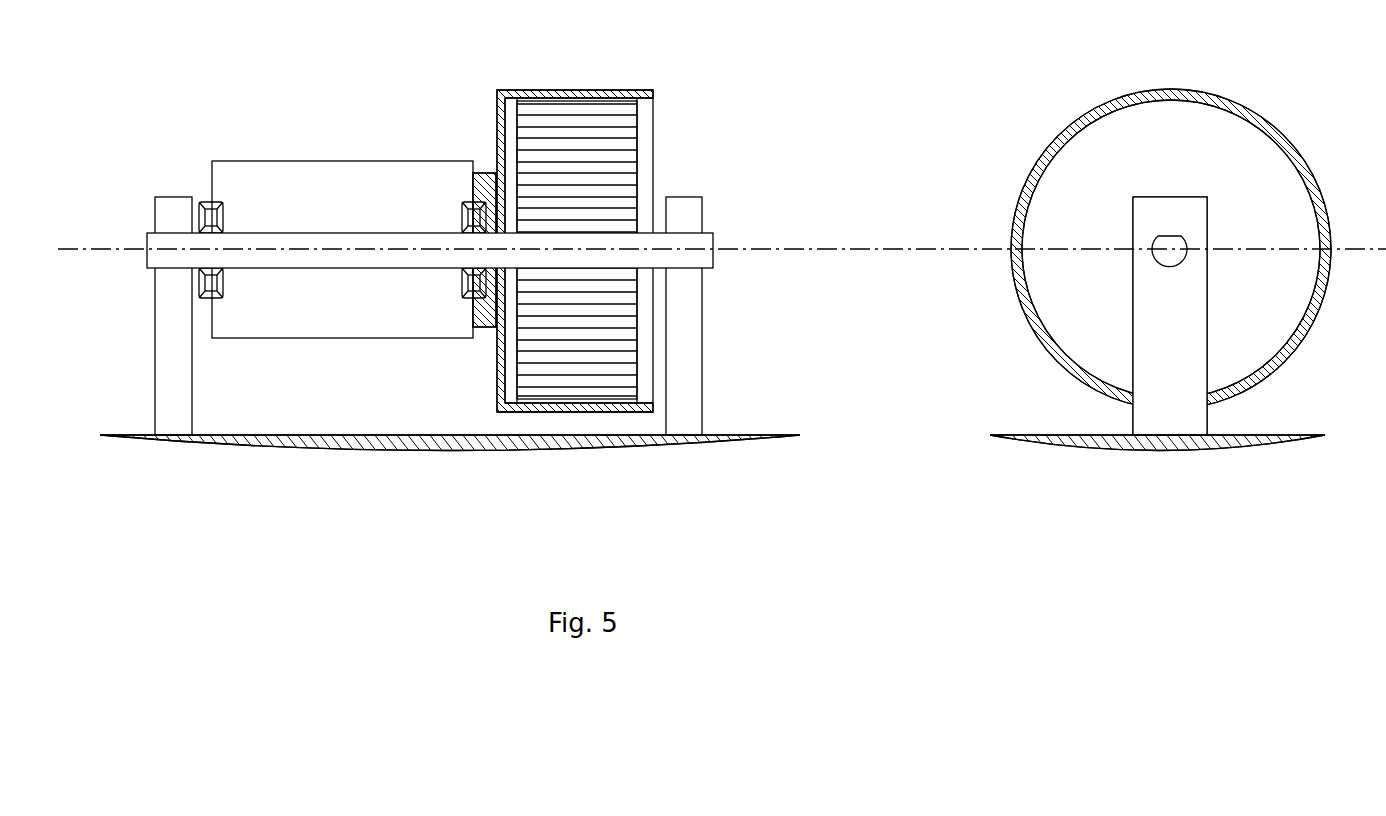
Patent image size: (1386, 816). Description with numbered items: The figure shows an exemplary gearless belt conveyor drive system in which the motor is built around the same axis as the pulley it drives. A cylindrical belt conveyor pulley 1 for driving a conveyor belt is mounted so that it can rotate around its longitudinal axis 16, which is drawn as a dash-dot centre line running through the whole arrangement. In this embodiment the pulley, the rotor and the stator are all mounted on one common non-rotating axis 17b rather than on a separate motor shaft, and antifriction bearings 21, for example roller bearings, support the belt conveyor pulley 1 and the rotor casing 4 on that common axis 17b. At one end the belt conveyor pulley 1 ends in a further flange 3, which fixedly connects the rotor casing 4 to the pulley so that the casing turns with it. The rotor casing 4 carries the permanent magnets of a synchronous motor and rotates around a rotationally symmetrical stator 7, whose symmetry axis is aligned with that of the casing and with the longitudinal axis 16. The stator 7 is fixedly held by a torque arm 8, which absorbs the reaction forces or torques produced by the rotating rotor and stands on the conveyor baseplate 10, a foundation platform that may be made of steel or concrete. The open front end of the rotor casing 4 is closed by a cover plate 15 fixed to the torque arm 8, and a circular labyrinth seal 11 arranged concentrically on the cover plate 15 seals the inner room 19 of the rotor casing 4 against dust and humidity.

The belt conveyor pulley 1 is at (257, 187).
The further flange 3 is at (485, 173).
The rotor casing 4 is at (558, 90).
The stator 7 is at (615, 175).
The torque arm 8 is at (688, 372).
The conveyor baseplate 10 is at (657, 445).
The labyrinth seal 11 is at (655, 97).
The cover plate 15 is at (655, 200).
The longitudinal axis 16 is at (788, 252).
The non-rotating axis 17b is at (357, 268).
The inner room 19 is at (512, 378).
The antifriction bearing 21 is at (210, 198).